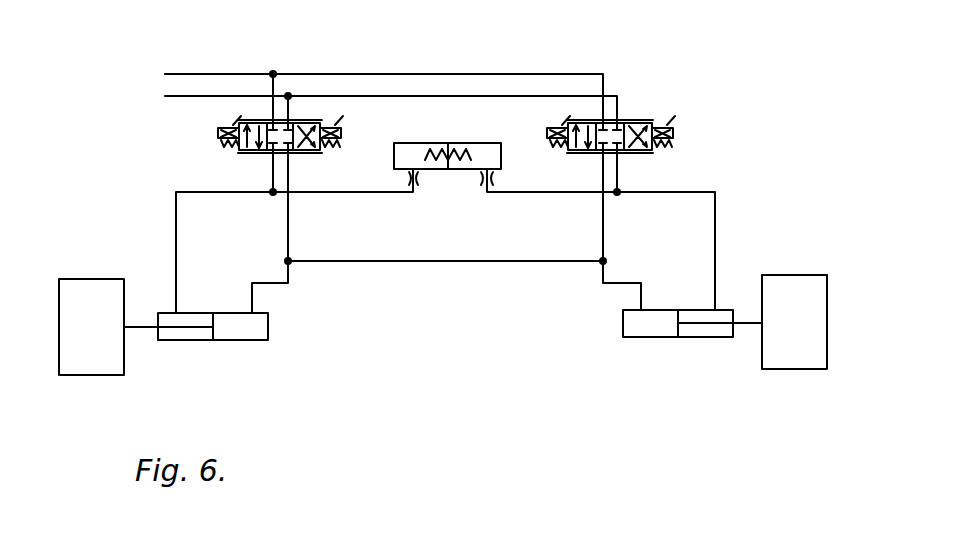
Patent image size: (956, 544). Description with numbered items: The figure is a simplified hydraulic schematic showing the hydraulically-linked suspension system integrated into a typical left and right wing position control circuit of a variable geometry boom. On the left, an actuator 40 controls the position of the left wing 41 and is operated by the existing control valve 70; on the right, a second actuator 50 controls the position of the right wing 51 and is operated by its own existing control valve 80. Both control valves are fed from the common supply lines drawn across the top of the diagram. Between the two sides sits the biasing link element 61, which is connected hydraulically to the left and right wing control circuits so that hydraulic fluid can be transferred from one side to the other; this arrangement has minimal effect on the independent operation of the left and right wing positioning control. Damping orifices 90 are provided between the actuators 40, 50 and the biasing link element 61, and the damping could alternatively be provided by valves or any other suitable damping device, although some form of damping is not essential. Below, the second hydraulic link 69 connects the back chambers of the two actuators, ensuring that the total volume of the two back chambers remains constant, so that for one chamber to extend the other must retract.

The actuator 40 is at (222, 342).
The left wing 41 is at (91, 327).
The actuator 50 is at (658, 340).
The right wing 51 is at (794, 322).
The biasing link element 61 is at (462, 171).
The second hydraulic link 69 is at (434, 263).
The control valve 70 is at (240, 162).
The control valve 80 is at (650, 160).
The damping orifices 90 is at (423, 183).